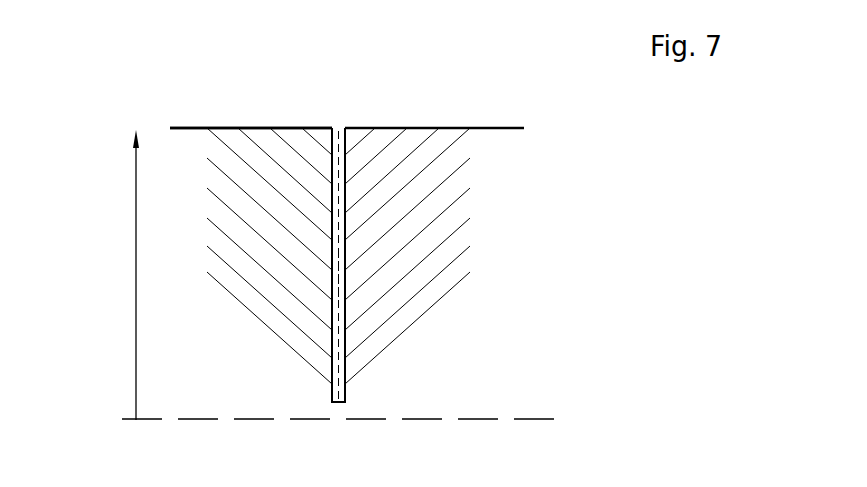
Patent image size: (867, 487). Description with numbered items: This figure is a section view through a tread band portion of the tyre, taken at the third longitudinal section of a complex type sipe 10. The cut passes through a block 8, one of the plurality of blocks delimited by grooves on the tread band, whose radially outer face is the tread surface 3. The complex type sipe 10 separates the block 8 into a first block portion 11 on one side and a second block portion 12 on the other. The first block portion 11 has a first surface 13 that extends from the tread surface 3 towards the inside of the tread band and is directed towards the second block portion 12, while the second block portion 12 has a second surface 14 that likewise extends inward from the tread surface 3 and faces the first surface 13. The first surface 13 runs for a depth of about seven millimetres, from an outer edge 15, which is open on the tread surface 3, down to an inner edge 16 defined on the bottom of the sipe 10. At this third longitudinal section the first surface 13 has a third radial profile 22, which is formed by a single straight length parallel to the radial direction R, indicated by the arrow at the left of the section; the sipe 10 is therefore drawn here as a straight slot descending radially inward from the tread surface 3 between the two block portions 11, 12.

The tread surface 3 is at (480, 122).
The block 8 is at (223, 118).
The complex type sipe 10 is at (340, 112).
The first block portion 11 is at (490, 375).
The second block portion 12 is at (228, 382).
The first surface 13 is at (342, 277).
The second surface 14 is at (338, 300).
The outer edge 15 is at (344, 127).
The inner edge 16 is at (347, 404).
The third radial profile 22 is at (358, 217).
The radial direction R is at (134, 238).